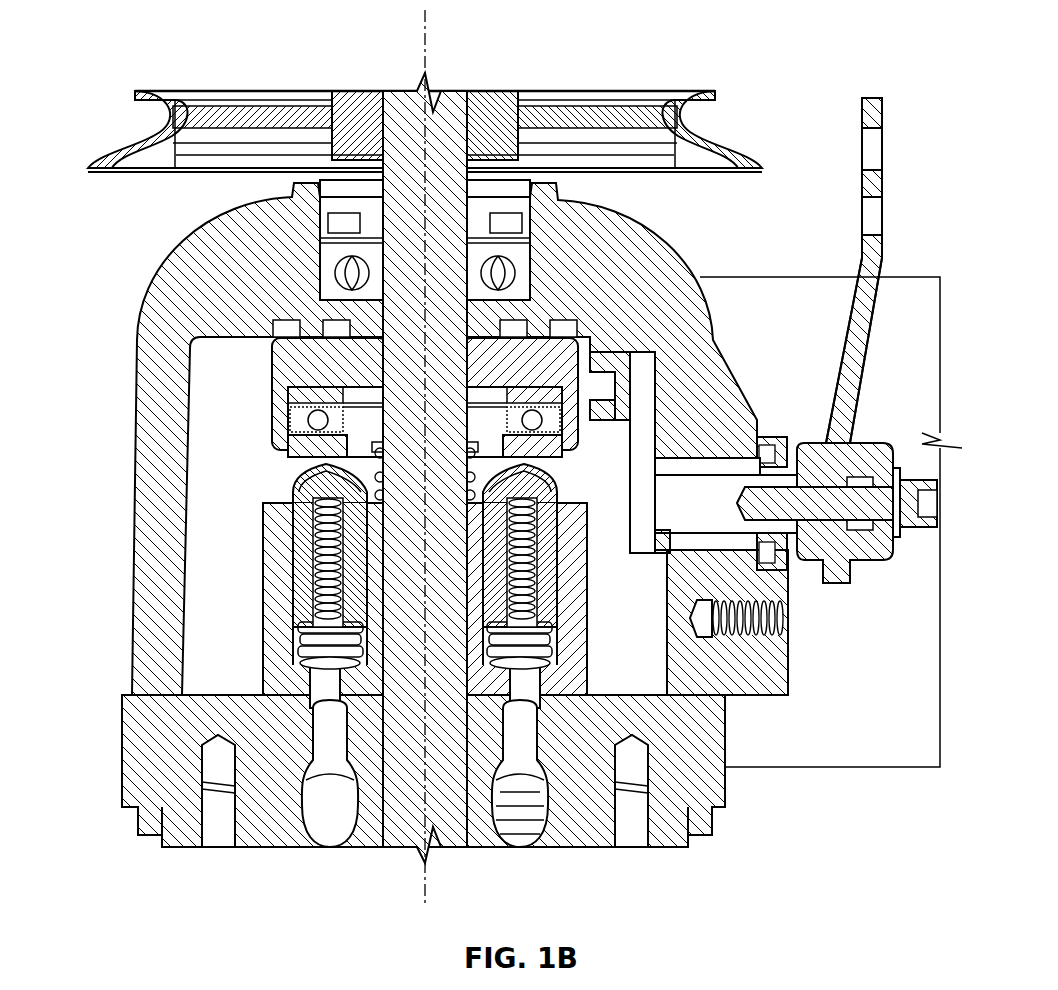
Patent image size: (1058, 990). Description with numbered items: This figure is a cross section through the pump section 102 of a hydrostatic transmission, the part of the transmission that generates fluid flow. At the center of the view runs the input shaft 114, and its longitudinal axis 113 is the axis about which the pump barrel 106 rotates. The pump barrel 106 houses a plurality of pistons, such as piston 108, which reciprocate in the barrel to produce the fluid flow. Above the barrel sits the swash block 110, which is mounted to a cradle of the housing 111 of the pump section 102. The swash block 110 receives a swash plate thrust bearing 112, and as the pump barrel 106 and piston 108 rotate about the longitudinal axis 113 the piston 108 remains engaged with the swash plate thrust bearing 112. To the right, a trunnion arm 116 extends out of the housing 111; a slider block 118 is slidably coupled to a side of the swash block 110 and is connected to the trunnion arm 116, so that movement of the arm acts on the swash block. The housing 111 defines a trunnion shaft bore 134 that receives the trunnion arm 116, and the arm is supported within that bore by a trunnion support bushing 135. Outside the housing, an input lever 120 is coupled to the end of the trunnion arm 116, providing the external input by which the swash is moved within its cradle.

The pump section 102 is at (419, 515).
The pump barrel 106 is at (262, 637).
The piston 108 is at (300, 582).
The swash block 110 is at (564, 340).
The housing 111 is at (157, 460).
The swash plate thrust bearing 112 is at (310, 443).
The longitudinal axis 113 is at (425, 62).
The input shaft 114 is at (437, 143).
The trunnion arm 116 is at (742, 490).
The slider block 118 is at (609, 340).
The input lever 120 is at (868, 108).
The trunnion shaft bore 134 is at (737, 440).
The trunnion support bushing 135 is at (694, 445).